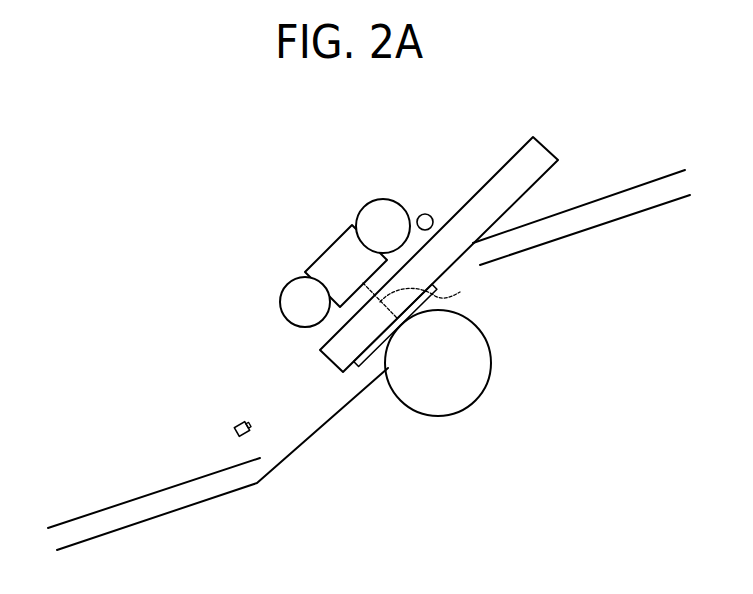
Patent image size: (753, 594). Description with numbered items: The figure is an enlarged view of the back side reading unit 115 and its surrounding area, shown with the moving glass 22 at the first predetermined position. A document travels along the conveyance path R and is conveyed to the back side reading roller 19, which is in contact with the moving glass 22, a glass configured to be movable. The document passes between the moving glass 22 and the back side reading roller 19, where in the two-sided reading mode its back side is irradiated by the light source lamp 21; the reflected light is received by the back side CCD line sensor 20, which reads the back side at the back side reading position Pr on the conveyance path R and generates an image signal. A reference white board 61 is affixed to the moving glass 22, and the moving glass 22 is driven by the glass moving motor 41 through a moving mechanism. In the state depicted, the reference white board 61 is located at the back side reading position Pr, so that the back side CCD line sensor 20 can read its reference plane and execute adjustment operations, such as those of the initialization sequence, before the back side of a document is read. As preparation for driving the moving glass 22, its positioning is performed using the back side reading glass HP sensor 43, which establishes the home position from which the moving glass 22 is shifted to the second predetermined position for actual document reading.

The back side reading unit 115 is at (277, 238).
The back side CCD line sensor 20 is at (337, 240).
The light source lamp 21 is at (377, 198).
The glass moving motor 41 is at (425, 214).
The moving glass 22 is at (520, 149).
The reference white board 61 is at (360, 368).
The back side reading roller 19 is at (440, 417).
The back side reading glass HP sensor 43 is at (232, 430).
The conveyance path R is at (642, 191).
The back side reading position Pr is at (425, 297).